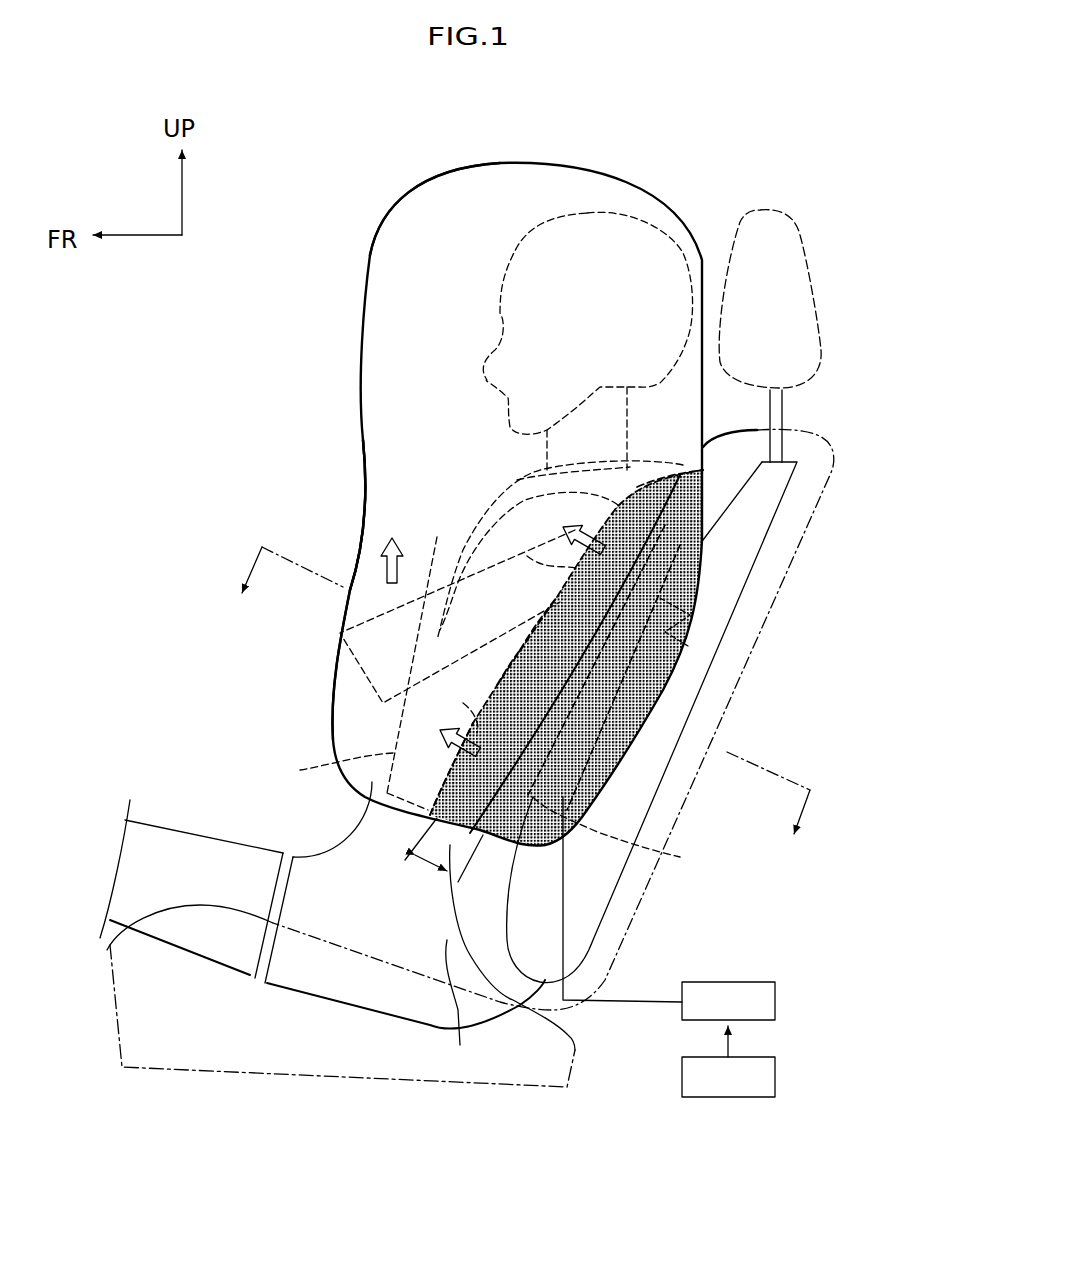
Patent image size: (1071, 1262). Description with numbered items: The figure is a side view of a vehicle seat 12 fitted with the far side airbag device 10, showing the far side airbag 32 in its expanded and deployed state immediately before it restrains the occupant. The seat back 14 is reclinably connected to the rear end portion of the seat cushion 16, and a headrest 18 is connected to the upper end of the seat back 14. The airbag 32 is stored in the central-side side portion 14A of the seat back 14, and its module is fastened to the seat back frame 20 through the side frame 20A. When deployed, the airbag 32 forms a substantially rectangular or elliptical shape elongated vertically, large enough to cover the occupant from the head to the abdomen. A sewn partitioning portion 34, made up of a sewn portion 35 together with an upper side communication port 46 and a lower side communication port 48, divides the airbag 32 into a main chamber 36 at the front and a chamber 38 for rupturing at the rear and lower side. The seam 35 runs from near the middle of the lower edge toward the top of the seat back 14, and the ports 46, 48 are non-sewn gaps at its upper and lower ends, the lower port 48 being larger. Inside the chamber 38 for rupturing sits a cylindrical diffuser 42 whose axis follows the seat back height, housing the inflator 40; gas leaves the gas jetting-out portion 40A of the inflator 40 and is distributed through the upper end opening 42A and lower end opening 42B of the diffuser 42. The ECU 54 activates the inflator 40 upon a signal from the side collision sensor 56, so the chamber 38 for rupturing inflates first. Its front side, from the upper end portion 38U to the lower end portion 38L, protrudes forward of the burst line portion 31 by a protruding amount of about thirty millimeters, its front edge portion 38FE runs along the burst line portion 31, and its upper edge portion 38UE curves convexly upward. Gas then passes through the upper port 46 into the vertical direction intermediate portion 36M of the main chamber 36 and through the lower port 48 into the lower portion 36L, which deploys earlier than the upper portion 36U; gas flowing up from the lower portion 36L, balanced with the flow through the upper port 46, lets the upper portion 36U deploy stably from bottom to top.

The far side airbag device 10 is at (268, 336).
The vehicle seat 12 is at (330, 1070).
The seat back 14 is at (640, 927).
The central-side side portion 14A is at (553, 719).
The seat cushion 16 is at (208, 1067).
The headrest 18 is at (790, 225).
The seat back frame 20 is at (620, 880).
The side frame 20A is at (652, 722).
The burst line portion 31 is at (557, 604).
The far side airbag 32 is at (366, 261).
The sewn partitioning portion 34 is at (531, 642).
The sewn portion 35 is at (513, 670).
The main chamber 36 is at (360, 432).
The upper portion of the main chamber 36U is at (440, 223).
The vertical direction intermediate portion of the main chamber 36M is at (390, 490).
The lower portion of the main chamber 36L is at (353, 697).
The chamber for rupturing 38 is at (607, 635).
The upper end portion of the chamber for rupturing 38U is at (628, 498).
The upper edge portion of the chamber for rupturing 38UE is at (683, 470).
The lower end portion of the chamber for rupturing 38L is at (458, 775).
The front edge portion of the chamber for rupturing 38FE is at (457, 616).
The inflator 40 is at (673, 675).
The gas jetting-out portion 40A is at (693, 628).
The diffuser 42 is at (660, 707).
The upper end opening 42A is at (697, 600).
The lower end opening 42B is at (635, 838).
The upper side communication port 46 is at (528, 566).
The lower side communication port 48 is at (459, 711).
The ECU 54 is at (682, 1007).
The side collision sensor 56 is at (682, 1085).